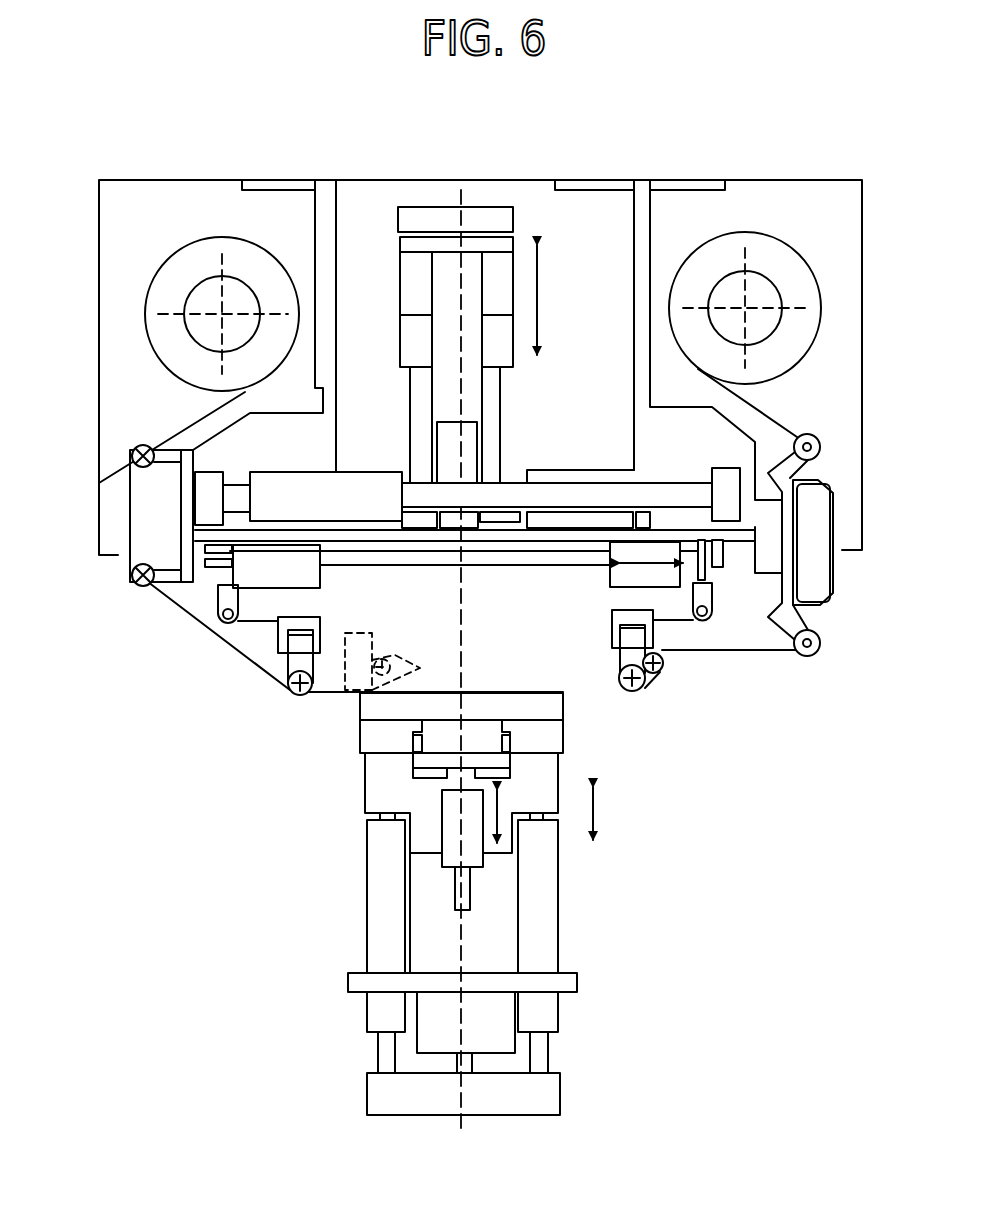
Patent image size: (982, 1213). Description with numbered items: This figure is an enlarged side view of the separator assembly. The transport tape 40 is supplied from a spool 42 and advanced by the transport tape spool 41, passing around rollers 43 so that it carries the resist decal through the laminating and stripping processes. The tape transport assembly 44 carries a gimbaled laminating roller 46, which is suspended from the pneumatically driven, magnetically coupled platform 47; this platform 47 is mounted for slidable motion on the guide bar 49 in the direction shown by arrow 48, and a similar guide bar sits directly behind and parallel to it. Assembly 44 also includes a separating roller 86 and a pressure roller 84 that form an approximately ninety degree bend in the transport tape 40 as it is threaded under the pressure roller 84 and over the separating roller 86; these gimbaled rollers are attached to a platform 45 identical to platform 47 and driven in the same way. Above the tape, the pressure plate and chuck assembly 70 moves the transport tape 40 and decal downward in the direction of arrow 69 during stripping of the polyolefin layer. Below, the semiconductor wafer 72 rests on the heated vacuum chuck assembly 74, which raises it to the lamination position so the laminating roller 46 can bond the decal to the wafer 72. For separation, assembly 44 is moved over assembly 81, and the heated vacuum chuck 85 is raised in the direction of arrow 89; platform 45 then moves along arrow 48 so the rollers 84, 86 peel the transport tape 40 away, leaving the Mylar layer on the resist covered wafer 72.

The transport tape 40 is at (190, 419).
The transport tape spool 41 is at (803, 257).
The spool 42 is at (195, 242).
The rollers 43 is at (130, 565).
The tape transport assembly 44 is at (187, 697).
The platform 45 is at (610, 580).
The gimbaled laminating roller 46 is at (288, 690).
The platform 47 is at (320, 575).
The arrow 48 is at (665, 565).
The guide bar 49 is at (515, 567).
The arrow 69 is at (540, 313).
The pressure plate and chuck assembly 70 is at (520, 418).
The semiconductor wafer 72 is at (565, 705).
The heated vacuum chuck assembly 74 is at (358, 738).
The assembly 81 is at (615, 742).
The pressure roller 84 is at (645, 688).
The heated vacuum chuck 85 is at (565, 742).
The separating roller 86 is at (664, 667).
The arrow 89 is at (597, 813).